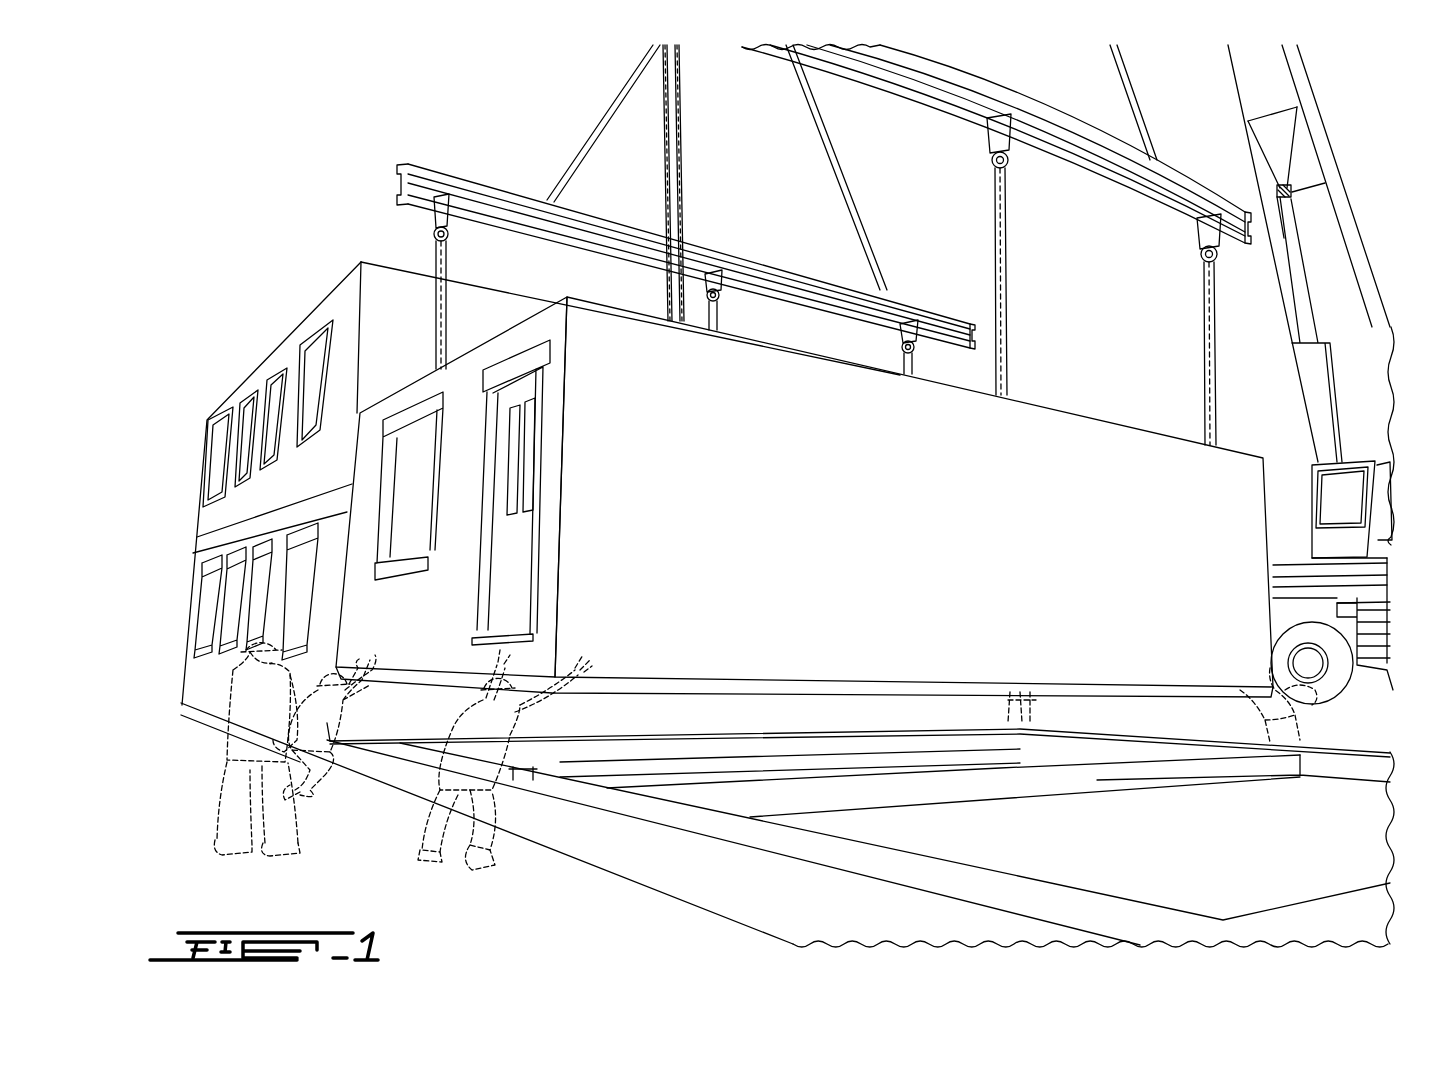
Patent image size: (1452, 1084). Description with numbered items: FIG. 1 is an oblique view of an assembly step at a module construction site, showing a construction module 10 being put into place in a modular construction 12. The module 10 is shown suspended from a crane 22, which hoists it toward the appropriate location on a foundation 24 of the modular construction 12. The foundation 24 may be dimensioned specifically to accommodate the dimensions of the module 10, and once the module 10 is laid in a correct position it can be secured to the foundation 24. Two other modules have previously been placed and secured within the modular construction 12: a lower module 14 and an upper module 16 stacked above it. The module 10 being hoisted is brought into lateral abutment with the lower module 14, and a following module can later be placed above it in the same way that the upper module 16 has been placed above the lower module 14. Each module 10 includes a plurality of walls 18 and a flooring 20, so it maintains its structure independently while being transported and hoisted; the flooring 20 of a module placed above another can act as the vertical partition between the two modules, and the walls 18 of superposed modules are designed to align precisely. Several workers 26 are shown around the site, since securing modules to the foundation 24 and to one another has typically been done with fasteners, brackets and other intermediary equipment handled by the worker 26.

The construction module 10 is at (892, 622).
The modular construction 12 is at (1311, 374).
The lower module 14 is at (300, 552).
The upper module 16 is at (275, 408).
The walls 18 is at (1130, 522).
The flooring 20 is at (750, 695).
The crane 22 is at (1318, 238).
The foundation 24 is at (1097, 780).
The worker 26 is at (230, 723).